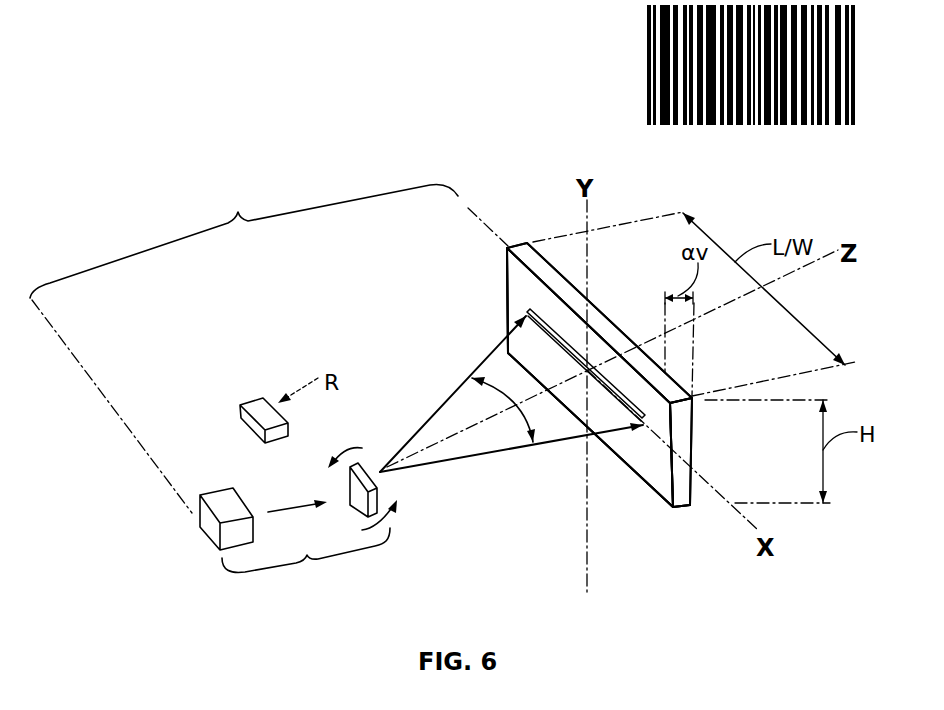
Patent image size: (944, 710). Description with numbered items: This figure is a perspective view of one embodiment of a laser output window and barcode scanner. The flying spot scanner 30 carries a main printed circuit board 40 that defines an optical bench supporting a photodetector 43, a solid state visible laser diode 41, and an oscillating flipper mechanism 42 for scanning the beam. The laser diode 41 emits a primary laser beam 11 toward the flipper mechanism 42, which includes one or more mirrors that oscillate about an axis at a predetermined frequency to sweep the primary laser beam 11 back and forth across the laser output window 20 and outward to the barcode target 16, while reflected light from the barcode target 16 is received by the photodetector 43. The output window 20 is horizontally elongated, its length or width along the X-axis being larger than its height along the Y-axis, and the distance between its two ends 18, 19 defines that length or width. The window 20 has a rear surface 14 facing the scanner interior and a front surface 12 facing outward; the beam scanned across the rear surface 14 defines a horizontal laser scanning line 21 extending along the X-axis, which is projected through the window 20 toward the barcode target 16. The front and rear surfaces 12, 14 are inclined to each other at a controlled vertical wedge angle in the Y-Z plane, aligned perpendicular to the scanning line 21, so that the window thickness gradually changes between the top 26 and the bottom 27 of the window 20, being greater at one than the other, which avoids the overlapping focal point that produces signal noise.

The barcode target 16 is at (646, 45).
The scanner 30 is at (269, 348).
The laser output window 20 is at (516, 272).
The top 26 is at (599, 322).
The end 19 is at (508, 320).
The front surface 12 is at (700, 442).
The rear surface 14 is at (659, 460).
The bottom 27 is at (627, 469).
The end 18 is at (676, 505).
The laser scanning line 21 is at (583, 372).
The primary laser beam 11 is at (462, 449).
The photodetector 43 is at (253, 402).
The visible laser diode 41 is at (220, 490).
The flipper mechanism 42 is at (348, 487).
The main printed circuit board 40 is at (306, 567).